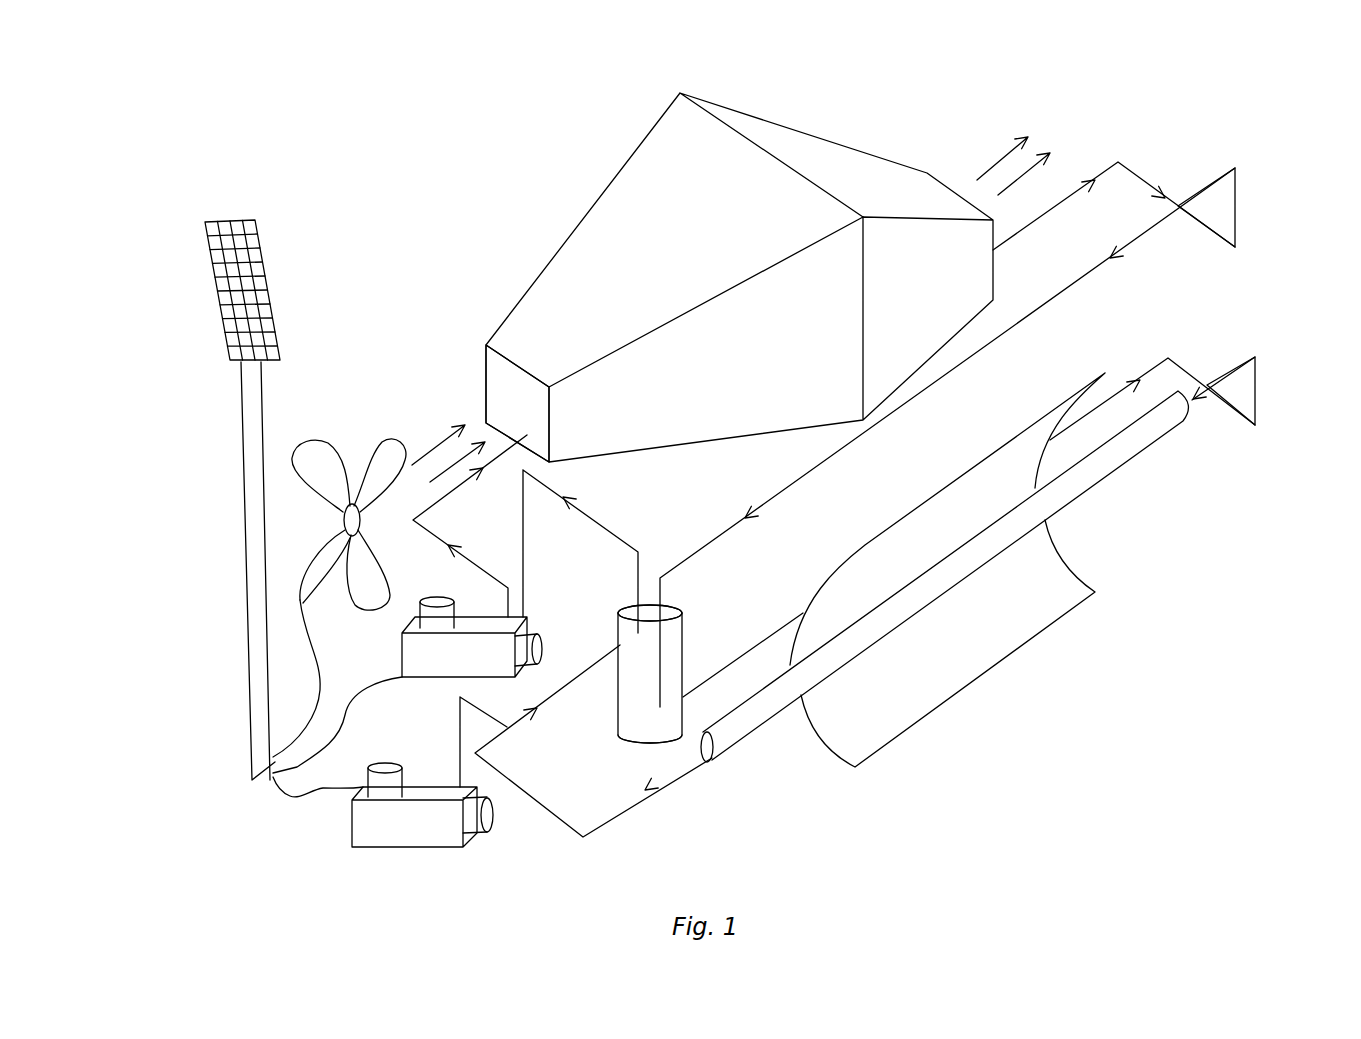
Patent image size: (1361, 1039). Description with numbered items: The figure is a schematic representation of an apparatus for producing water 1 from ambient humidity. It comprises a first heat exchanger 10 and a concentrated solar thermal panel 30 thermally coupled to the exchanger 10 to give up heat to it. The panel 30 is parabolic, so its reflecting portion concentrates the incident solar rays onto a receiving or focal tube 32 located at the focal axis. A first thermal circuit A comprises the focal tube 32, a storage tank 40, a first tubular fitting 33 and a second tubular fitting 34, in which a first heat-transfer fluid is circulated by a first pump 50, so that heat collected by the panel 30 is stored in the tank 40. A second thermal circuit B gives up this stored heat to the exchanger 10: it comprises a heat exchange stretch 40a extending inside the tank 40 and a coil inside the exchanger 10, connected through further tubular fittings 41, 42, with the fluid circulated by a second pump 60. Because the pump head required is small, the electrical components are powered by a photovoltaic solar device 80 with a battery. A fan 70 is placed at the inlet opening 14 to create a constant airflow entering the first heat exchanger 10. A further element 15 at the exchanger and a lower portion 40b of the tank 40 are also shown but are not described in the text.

The apparatus for producing water 1 is at (1257, 101).
The first heat exchanger 10 is at (606, 172).
The inlet opening 14 is at (498, 382).
The outlet pipe 15 is at (993, 237).
The concentrated solar thermal panel 30 is at (988, 683).
The focal tube 32 is at (1087, 477).
The first tubular fitting 33 is at (568, 827).
The second tubular fitting 34 is at (1187, 375).
The storage tank 40 is at (696, 630).
The heat exchange stretch 40a is at (620, 645).
The tank bottom 40b is at (632, 723).
The tubular fitting 41 is at (622, 538).
The tubular fitting 42 is at (1000, 337).
The first pump 50 is at (429, 855).
The second pump 60 is at (418, 688).
The fan 70 is at (373, 422).
The photovoltaic solar device 80 is at (218, 356).
The first thermal circuit A is at (1265, 397).
The second thermal circuit B is at (1246, 207).